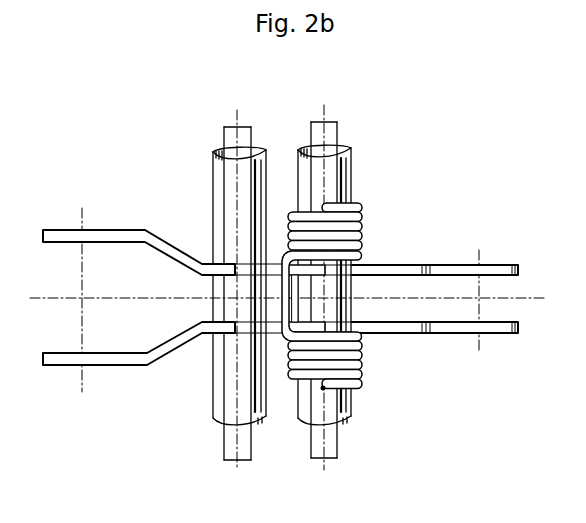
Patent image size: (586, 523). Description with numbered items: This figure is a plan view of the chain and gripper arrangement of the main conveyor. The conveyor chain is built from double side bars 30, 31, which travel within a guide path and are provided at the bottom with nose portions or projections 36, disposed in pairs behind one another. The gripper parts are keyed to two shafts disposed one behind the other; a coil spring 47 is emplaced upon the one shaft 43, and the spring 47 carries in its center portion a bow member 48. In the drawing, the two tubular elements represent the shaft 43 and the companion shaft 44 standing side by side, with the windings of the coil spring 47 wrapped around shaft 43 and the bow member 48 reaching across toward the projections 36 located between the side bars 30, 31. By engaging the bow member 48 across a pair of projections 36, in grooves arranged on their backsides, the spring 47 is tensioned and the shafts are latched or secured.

The side bar 30 is at (67, 237).
The side bar 31 is at (60, 362).
The nose portions or projections 36 is at (217, 279).
The shaft 43 is at (337, 122).
The rod / tube 44 is at (233, 132).
The coil spring 47 is at (356, 226).
The bow member 48 is at (283, 288).